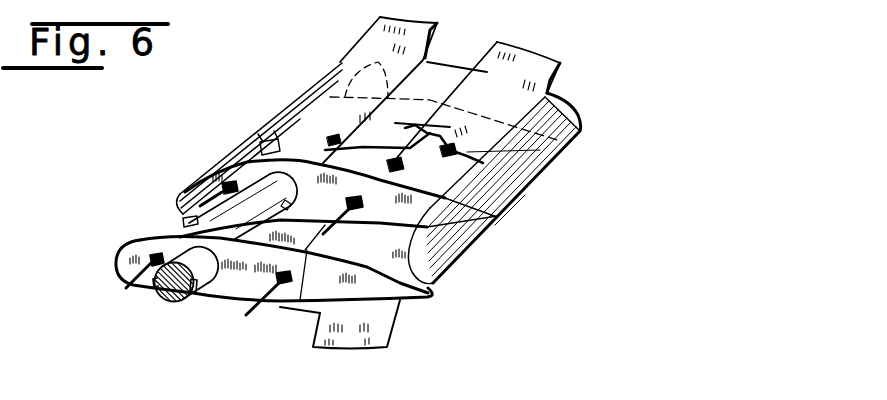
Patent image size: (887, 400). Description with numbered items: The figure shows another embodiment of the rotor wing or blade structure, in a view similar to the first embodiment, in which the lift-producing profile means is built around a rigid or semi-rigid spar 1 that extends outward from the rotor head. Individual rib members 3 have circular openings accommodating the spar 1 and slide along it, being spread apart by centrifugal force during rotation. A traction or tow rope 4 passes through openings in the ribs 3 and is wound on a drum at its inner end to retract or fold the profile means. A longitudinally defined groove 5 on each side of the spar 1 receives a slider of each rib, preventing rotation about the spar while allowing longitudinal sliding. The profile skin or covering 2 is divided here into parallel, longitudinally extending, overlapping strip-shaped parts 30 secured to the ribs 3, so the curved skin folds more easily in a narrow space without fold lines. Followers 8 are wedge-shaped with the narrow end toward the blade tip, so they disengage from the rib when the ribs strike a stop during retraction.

The strip-shaped parts of the covering 30 is at (517, 67).
The outer skin or covering 2 is at (540, 182).
The rib member 3 is at (430, 215).
The traction or tow rope 4 is at (126, 288).
The spar 1 is at (168, 303).
The longitudinally defined groove 5 is at (203, 301).
The follower 8 is at (183, 221).